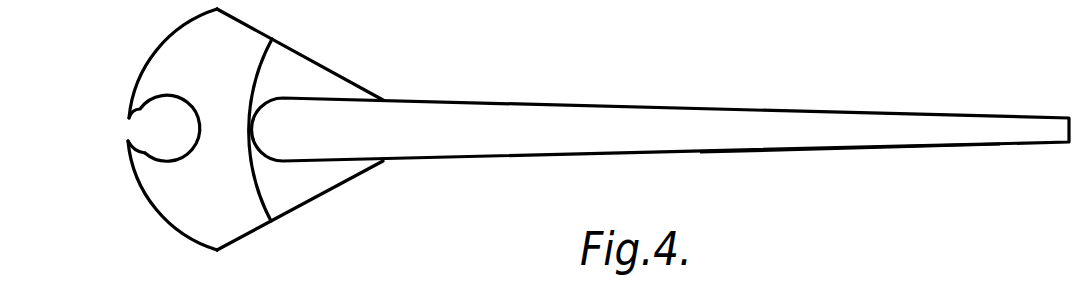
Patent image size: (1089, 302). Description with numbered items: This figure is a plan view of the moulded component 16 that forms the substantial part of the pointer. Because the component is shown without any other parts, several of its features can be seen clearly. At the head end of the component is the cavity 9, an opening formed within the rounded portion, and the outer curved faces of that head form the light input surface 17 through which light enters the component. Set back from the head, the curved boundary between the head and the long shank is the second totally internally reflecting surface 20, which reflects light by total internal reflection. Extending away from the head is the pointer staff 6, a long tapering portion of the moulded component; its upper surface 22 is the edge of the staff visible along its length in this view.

The moulded component 16 is at (590, 85).
The light input surface 17 is at (157, 41).
The cavity 9 is at (152, 144).
The second totally internally reflecting surface 20 is at (262, 66).
The pointer staff 6 is at (697, 153).
The upper surface 22 is at (827, 143).